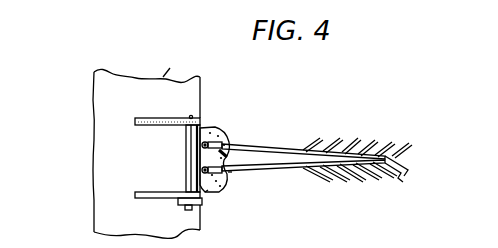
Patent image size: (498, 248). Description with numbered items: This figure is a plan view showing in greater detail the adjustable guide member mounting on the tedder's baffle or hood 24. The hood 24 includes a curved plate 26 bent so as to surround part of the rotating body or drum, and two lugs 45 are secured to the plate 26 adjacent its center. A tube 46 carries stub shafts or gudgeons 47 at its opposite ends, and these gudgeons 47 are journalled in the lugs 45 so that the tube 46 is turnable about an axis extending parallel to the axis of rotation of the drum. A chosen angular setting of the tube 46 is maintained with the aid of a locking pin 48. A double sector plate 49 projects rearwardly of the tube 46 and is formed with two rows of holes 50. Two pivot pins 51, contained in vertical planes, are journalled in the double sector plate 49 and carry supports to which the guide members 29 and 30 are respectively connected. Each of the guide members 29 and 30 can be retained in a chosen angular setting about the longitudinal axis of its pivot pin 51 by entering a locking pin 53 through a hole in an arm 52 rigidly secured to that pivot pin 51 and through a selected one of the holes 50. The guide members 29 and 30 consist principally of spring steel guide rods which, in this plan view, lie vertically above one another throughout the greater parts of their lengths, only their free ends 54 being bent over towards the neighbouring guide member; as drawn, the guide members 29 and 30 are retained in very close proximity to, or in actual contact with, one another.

The baffle or hood 24 is at (92, 148).
The curved plate 26 is at (179, 59).
The guide member 29 is at (293, 171).
The guide member 30 is at (307, 144).
The lugs 45 is at (143, 118).
The tube 46 is at (186, 137).
The stub shafts or gudgeons 47 is at (190, 116).
The locking pin 48 is at (180, 211).
The double sector plate 49 is at (207, 127).
The holes 50 is at (219, 137).
The pivot pins 51 is at (196, 160).
The arm 52 is at (208, 191).
The locking pin 53 is at (231, 173).
The free ends 54 is at (399, 177).